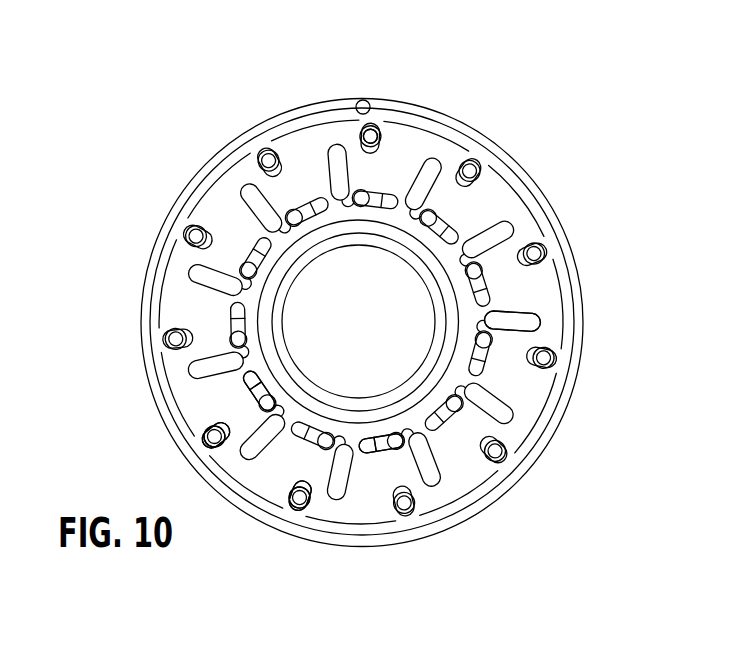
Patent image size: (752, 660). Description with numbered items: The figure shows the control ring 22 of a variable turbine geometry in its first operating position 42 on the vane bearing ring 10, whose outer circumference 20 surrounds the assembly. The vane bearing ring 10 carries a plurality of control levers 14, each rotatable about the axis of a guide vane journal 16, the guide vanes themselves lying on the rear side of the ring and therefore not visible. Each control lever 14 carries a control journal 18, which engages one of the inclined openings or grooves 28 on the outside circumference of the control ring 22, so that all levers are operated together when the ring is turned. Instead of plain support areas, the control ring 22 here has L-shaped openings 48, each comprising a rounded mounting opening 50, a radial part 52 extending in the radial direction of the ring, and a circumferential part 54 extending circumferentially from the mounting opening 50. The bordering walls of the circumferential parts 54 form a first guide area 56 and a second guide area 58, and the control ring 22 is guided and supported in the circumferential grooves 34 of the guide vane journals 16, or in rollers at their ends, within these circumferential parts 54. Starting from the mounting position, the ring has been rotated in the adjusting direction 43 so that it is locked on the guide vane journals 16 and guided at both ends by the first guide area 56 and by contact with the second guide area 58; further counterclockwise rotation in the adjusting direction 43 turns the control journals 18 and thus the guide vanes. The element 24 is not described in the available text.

The vane bearing ring 10 is at (160, 350).
The control lever 14 is at (300, 200).
The guide vane journal 16 is at (418, 215).
The control journal 18 is at (352, 122).
The circumference of the vane bearing ring 20 is at (152, 240).
The control ring 22 is at (498, 205).
The roller head 24 is at (331, 486).
The inclined opening/groove 28 is at (222, 218).
The circumferential groove 34 is at (395, 454).
The first operating position 42 is at (514, 133).
The adjusting direction 43 is at (410, 119).
The L-shaped opening 48 is at (514, 306).
The mounting opening 50 is at (298, 423).
The radial part 52 is at (548, 328).
The circumferential part 54 is at (545, 362).
The first guide area 56 is at (228, 423).
The second guide area 58 is at (250, 390).